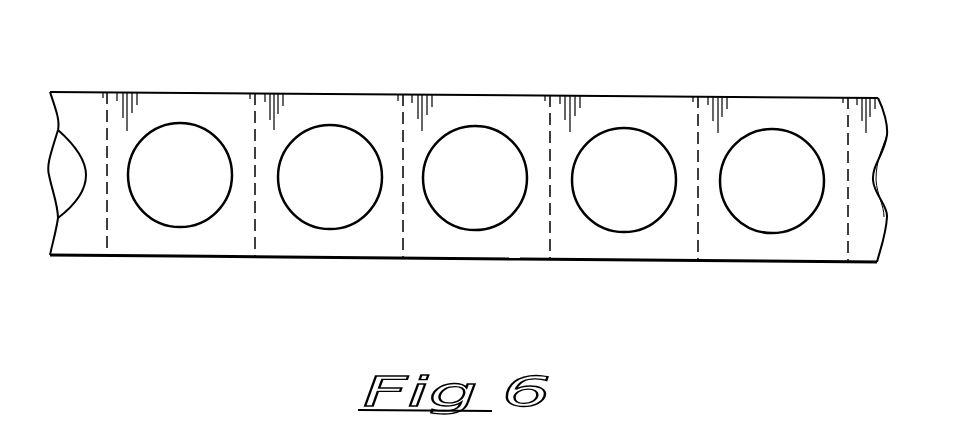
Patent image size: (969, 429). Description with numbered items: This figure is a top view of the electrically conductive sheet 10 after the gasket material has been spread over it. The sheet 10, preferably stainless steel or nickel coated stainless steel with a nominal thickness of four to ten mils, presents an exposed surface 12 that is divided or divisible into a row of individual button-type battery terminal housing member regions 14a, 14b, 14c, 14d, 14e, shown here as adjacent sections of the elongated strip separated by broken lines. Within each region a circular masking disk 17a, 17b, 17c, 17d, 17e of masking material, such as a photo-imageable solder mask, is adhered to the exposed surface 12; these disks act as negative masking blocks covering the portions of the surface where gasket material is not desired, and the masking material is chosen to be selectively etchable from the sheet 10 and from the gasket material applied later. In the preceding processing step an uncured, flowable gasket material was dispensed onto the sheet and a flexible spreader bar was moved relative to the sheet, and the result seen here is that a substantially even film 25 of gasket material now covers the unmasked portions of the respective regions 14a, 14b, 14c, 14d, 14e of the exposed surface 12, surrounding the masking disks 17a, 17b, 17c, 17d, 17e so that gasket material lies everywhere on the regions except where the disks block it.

The electrically conductive sheet 10 is at (705, 65).
The exposed surface 12 is at (445, 95).
The button-type battery terminal housing member region 14a is at (156, 242).
The button-type battery terminal housing member region 14b is at (310, 250).
The button-type battery terminal housing member region 14c is at (455, 250).
The button-type battery terminal housing member region 14d is at (594, 252).
The button-type battery terminal housing member region 14e is at (797, 252).
The masking disk 17a is at (157, 197).
The masking disk 17b is at (307, 198).
The masking disk 17c is at (452, 193).
The masking disk 17d is at (598, 192).
The masking disk 17e is at (753, 200).
The film of gasket material 25 is at (233, 243).